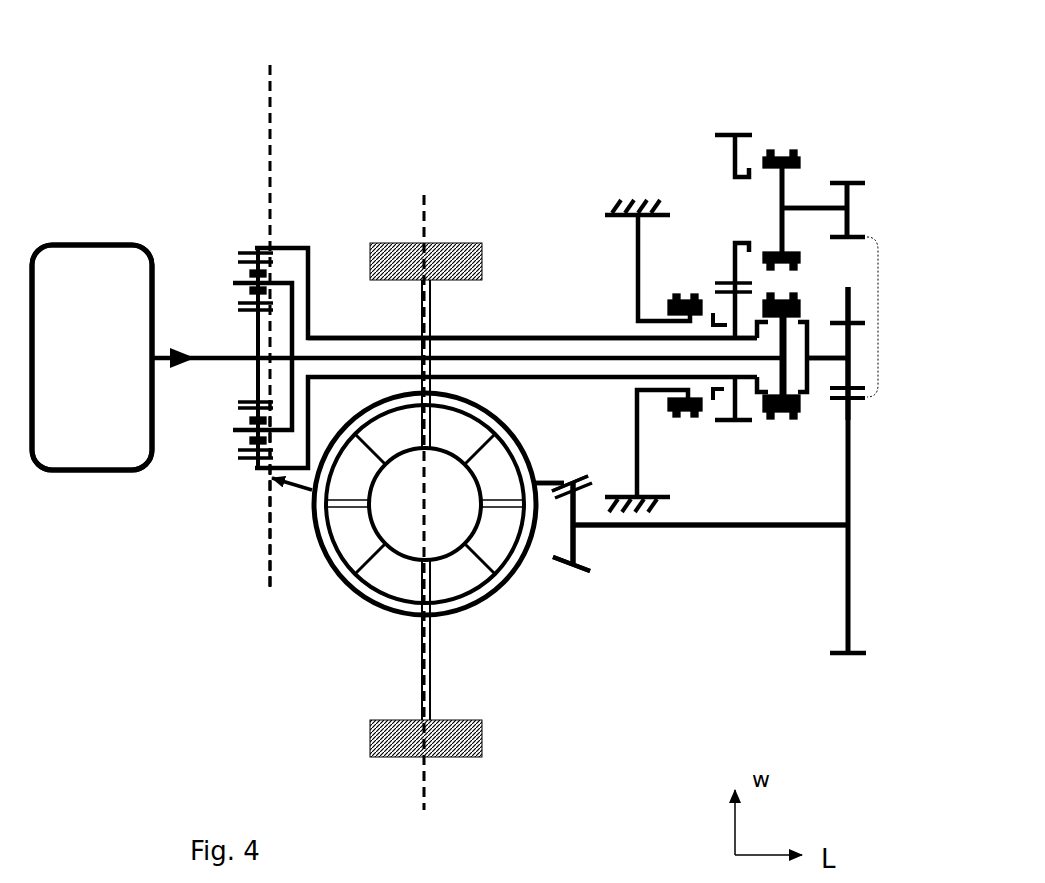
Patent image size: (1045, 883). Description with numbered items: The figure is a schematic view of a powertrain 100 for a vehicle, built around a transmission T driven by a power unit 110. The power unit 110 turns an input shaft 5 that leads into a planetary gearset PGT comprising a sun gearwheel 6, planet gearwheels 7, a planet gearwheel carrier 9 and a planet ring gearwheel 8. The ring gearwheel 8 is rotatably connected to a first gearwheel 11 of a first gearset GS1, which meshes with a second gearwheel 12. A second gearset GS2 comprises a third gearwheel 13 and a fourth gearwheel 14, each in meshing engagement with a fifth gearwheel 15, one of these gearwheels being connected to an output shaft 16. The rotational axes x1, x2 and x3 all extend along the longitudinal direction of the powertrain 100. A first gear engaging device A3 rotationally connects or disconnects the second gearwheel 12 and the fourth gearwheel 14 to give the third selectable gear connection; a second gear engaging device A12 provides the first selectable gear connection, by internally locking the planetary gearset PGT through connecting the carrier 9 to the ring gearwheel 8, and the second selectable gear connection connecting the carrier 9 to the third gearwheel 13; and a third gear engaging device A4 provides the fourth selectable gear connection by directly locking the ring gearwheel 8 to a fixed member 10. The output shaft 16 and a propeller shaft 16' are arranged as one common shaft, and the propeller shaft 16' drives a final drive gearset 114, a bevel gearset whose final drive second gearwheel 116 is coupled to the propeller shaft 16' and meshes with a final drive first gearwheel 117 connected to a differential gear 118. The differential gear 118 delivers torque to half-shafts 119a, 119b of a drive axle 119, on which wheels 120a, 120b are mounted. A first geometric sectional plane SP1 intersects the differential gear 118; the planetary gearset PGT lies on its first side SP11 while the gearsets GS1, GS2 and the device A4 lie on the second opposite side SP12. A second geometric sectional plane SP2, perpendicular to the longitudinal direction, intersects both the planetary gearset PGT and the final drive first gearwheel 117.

The powertrain 100 is at (150, 205).
The power unit 110 is at (75, 336).
The input shaft 5 is at (222, 366).
The sun gearwheel 6 is at (250, 330).
The planet gearwheels 7 is at (250, 303).
The planet ring gearwheel 8 is at (255, 249).
The planet gearwheel carrier 9 is at (235, 283).
The fixed member 10 is at (605, 214).
The first gearwheel 11 is at (727, 425).
The second gearwheel 12 is at (733, 150).
The third gearwheel 13 is at (850, 320).
The fourth gearwheel 14 is at (843, 182).
The fifth gearwheel 15 is at (841, 658).
The output shaft 16 is at (710, 603).
The propeller shaft 16' is at (710, 598).
The final drive gearset 114 is at (606, 626).
The final drive second gearwheel 116 is at (575, 548).
The final drive first gearwheel 117 is at (545, 485).
The differential gear 118 is at (475, 600).
The drive axle 119 is at (405, 636).
The half-shaft 119a is at (422, 686).
The half-shaft 119b is at (422, 307).
The wheel 120a is at (370, 737).
The wheel 120b is at (370, 243).
The first gear engaging device A3 is at (781, 155).
The third gear engaging device A4 is at (688, 414).
The second gear engaging device A12 is at (795, 416).
The planetary gearset PGT is at (258, 236).
The transmission T is at (555, 165).
The first gearset GS1 is at (697, 128).
The second gearset GS2 is at (880, 160).
The first geometric sectional plane SP1 is at (428, 787).
The second geometric sectional plane SP2 is at (268, 95).
The first side SP11 is at (217, 570).
The second opposite side SP12 is at (683, 757).
The rotational axis x1 is at (848, 358).
The rotational axis x2 is at (847, 208).
The rotational axis x3 is at (848, 525).